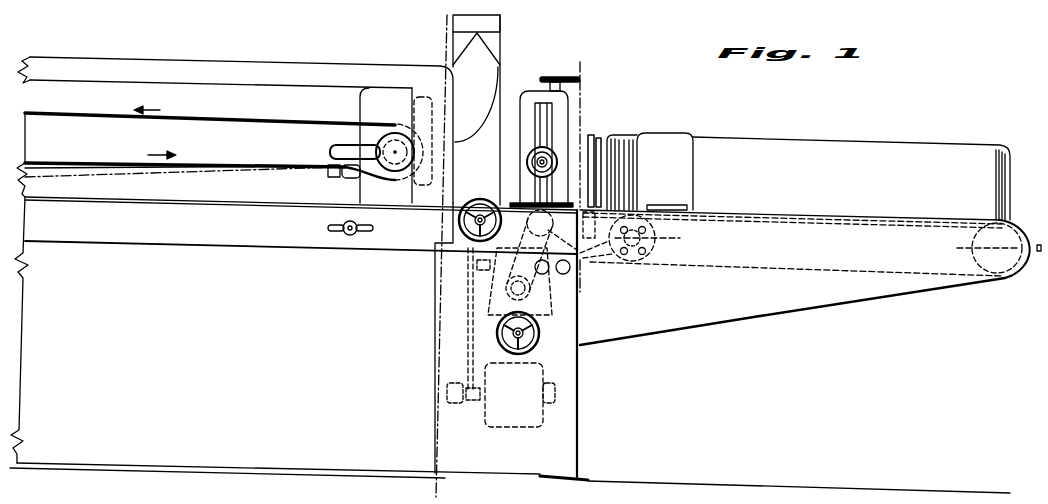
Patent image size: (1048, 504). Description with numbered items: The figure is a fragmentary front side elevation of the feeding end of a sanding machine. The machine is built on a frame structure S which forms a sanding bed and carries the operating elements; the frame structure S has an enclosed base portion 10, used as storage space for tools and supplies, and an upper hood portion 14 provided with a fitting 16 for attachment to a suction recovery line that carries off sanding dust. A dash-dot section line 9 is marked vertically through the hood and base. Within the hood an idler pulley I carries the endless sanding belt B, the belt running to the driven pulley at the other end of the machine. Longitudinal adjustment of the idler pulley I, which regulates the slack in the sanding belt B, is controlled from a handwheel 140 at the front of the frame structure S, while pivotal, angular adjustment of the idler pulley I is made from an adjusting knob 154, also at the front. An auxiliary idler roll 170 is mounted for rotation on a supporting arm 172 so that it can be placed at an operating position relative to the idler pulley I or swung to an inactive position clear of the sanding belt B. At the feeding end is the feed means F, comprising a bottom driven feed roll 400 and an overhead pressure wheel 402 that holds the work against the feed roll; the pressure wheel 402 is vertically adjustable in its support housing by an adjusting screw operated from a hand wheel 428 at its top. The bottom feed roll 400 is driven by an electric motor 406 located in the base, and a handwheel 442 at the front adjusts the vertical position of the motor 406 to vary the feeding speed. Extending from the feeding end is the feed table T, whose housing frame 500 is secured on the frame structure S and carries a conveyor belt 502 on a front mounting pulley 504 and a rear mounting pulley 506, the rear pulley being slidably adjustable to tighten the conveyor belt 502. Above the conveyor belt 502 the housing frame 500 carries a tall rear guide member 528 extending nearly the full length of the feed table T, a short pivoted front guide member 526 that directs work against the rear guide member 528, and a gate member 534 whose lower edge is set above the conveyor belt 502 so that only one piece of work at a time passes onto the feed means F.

The upper hood portion 14 is at (161, 58).
The endless sanding belt B is at (262, 120).
The idler pulley I is at (395, 148).
The supporting arm 172 is at (328, 178).
The auxiliary idler roll 170 is at (357, 186).
The adjusting knob 154 is at (350, 237).
The enclosed base portion 10 is at (208, 360).
The fitting 16 is at (479, 127).
The section line 9- 9 is at (434, 22).
The handwheel 140 is at (486, 191).
The feed means F is at (527, 92).
The hand wheel 428 is at (548, 76).
The overhead pressure wheel 402 is at (527, 165).
The gate member 534 is at (583, 140).
The front guide member 526 is at (676, 140).
The rear guide member 528 is at (833, 148).
The housing frame 500 is at (720, 322).
The feed table T is at (838, 302).
The conveyor belt 502 is at (830, 266).
The front mounting pulley 504 is at (660, 238).
The rear mounting pulley 506 is at (969, 248).
The bottom driven feed roll 400 is at (583, 261).
The handwheel 442 is at (540, 340).
The electric motor 406 is at (515, 421).
The frame structure S is at (577, 407).